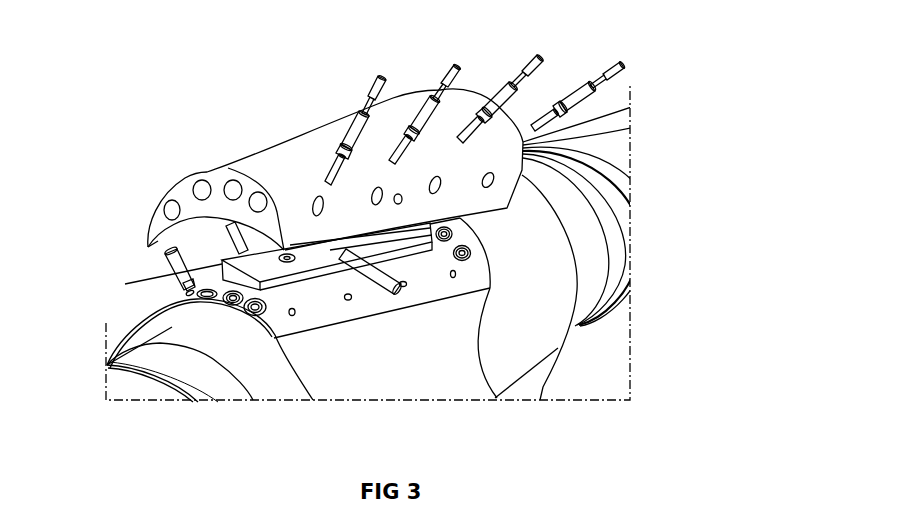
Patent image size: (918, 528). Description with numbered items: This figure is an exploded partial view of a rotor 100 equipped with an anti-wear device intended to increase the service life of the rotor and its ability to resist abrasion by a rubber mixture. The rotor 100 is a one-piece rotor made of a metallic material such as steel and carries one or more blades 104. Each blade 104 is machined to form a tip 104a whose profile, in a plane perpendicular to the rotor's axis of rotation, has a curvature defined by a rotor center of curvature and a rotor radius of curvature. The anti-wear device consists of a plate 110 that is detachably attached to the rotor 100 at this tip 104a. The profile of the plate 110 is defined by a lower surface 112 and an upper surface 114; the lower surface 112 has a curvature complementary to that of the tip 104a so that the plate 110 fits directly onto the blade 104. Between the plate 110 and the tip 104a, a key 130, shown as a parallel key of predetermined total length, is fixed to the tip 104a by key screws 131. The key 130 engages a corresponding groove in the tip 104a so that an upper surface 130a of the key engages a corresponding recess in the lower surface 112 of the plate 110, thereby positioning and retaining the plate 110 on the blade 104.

The rotor 100 is at (593, 48).
The blade 104 is at (452, 323).
The tip of the blade 104a is at (477, 279).
The plate 110 is at (349, 160).
The lower surface 112 is at (150, 245).
The upper surface 114 is at (267, 167).
The key 130 is at (272, 287).
The upper surface of the key 130a is at (128, 285).
The key screws 131 is at (383, 291).